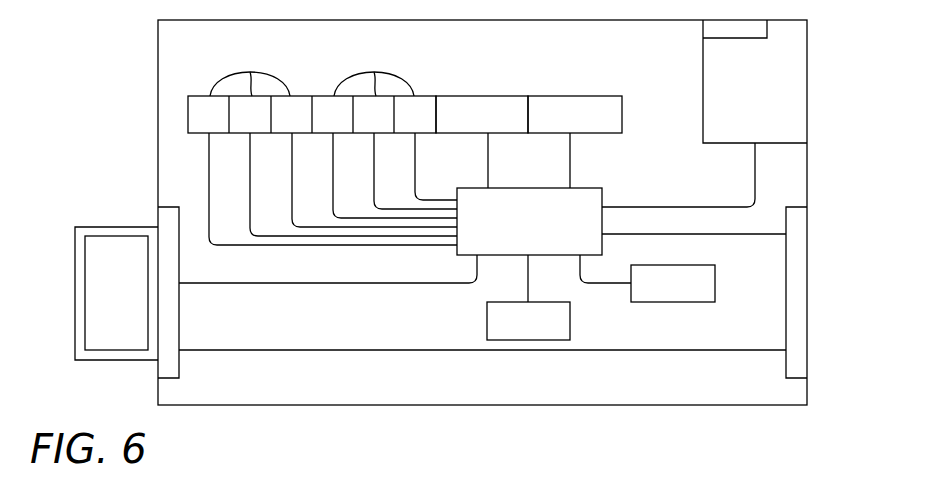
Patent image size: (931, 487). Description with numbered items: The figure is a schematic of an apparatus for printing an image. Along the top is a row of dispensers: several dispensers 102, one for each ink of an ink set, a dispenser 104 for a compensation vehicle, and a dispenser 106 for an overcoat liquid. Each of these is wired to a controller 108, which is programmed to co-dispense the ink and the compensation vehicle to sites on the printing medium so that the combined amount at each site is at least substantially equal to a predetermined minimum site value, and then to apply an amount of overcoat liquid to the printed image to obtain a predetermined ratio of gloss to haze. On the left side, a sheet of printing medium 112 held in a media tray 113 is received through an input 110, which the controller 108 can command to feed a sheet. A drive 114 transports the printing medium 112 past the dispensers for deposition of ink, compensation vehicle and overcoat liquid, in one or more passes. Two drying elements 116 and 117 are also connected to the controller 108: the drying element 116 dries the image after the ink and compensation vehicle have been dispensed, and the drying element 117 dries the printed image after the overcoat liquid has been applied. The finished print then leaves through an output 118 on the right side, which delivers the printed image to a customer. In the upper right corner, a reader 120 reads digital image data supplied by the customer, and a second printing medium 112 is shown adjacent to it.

The dispensers 102 is at (250, 72).
The dispenser 104 is at (490, 96).
The dispenser 106 is at (572, 96).
The controller 108 is at (529, 221).
The input 110 is at (179, 320).
The printing medium 112 is at (446, 185).
The media tray 113 is at (118, 227).
The drive 114 is at (447, 350).
The drying element 116 is at (487, 320).
The drying element 117 is at (673, 302).
The output 118 is at (786, 366).
The reader 120 is at (703, 28).